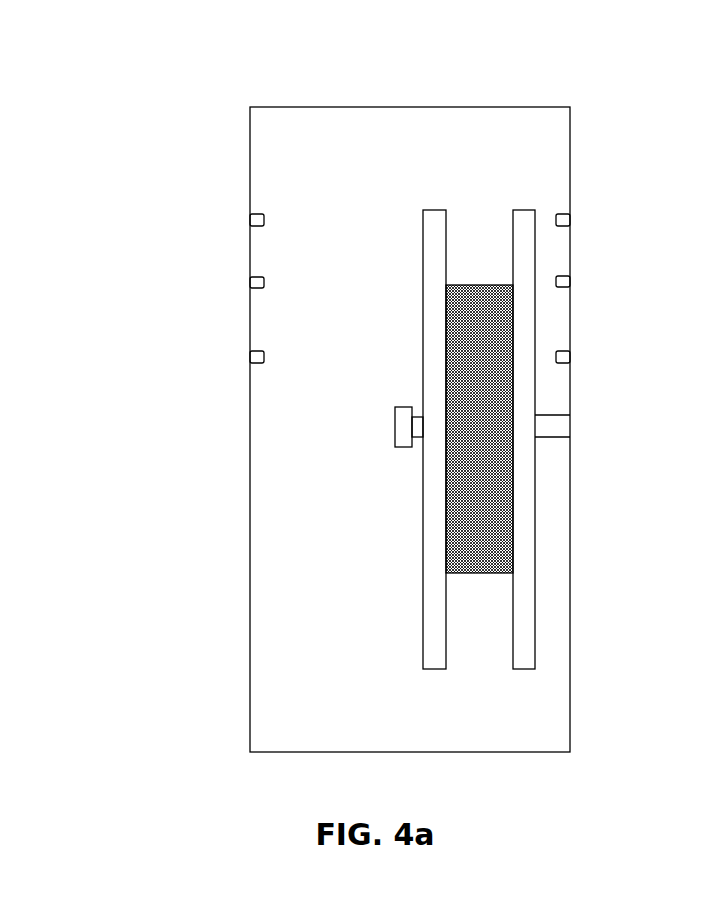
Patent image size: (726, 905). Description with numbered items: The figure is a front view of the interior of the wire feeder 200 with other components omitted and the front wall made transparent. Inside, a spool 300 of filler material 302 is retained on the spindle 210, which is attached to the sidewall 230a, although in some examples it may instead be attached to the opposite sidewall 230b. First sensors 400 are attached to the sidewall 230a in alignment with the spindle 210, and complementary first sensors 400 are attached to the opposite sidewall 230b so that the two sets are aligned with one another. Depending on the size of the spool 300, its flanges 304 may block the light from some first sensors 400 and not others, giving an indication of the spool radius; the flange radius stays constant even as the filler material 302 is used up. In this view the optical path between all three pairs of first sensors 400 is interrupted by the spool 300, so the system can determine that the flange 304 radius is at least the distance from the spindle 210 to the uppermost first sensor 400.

The wire feeder 200 is at (222, 113).
The first sensors 400 is at (248, 357).
The spool 300 is at (469, 444).
The flanges 304 is at (433, 669).
The filler material 302 is at (480, 573).
The spindle 210 is at (548, 428).
The sidewall 230a is at (577, 559).
The opposite sidewall 230b is at (227, 553).